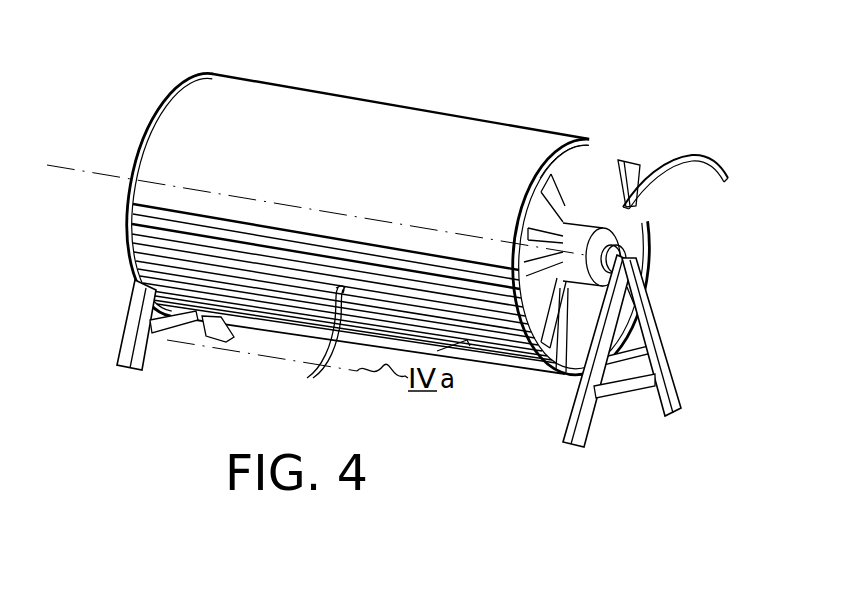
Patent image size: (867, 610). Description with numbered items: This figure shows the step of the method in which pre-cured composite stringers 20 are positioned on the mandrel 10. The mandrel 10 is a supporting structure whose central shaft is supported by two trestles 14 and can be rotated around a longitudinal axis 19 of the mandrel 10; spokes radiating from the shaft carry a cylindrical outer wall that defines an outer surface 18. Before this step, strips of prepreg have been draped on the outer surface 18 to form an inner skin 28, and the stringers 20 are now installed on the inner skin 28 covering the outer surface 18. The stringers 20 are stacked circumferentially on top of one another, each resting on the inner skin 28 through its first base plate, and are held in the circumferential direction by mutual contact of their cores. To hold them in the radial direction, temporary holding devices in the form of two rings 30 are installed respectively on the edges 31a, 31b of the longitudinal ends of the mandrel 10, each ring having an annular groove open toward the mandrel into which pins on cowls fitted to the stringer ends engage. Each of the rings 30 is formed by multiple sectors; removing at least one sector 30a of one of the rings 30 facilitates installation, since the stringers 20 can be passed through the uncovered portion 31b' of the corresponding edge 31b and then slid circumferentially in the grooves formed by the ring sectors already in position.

The mandrel 10 is at (662, 232).
The trestles 14 is at (210, 327).
The outer surface 18 is at (606, 154).
The longitudinal axis 19 is at (633, 281).
The stringers 20 is at (318, 367).
The inner skin 28 is at (283, 110).
The rings 30 is at (161, 108).
The sector 30a is at (690, 157).
The edge 31a is at (165, 155).
The edge 31b is at (568, 223).
The uncovered portion 31b' is at (581, 110).